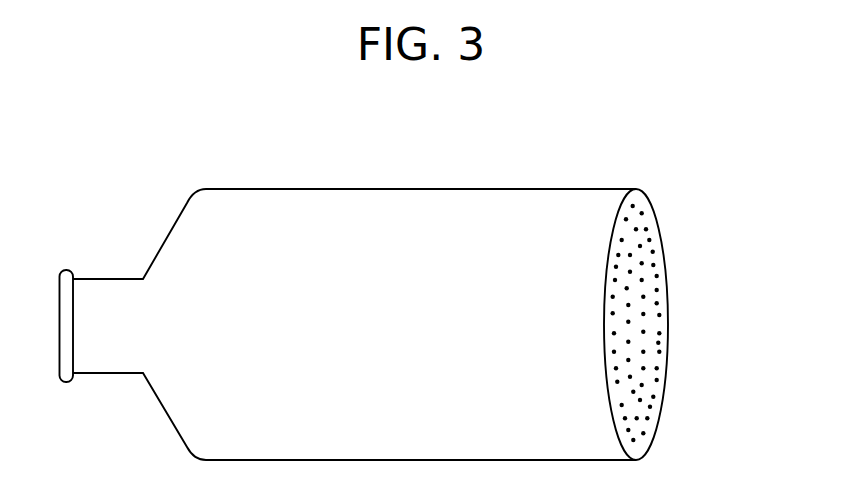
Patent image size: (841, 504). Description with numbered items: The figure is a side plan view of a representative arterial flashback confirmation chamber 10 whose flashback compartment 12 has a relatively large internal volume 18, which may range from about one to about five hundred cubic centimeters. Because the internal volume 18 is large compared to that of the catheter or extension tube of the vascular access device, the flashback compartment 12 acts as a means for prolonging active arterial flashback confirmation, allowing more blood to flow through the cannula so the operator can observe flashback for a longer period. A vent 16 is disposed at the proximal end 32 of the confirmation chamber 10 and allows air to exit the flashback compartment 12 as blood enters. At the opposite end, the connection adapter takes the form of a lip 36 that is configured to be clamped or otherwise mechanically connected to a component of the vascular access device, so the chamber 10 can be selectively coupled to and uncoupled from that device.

The arterial flashback confirmation chamber 10 is at (588, 153).
The flashback compartment 12 is at (288, 187).
The vent 16 is at (645, 367).
The internal volume 18 is at (457, 222).
The proximal end 32 is at (686, 305).
The lip 36 is at (68, 270).